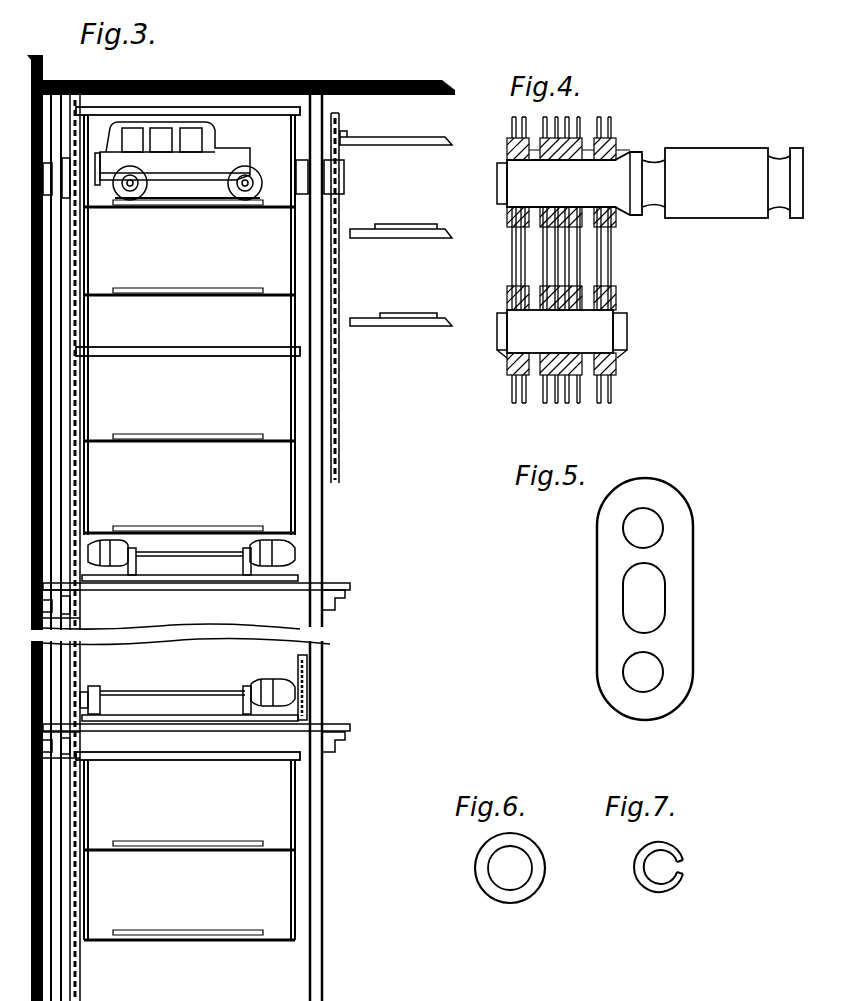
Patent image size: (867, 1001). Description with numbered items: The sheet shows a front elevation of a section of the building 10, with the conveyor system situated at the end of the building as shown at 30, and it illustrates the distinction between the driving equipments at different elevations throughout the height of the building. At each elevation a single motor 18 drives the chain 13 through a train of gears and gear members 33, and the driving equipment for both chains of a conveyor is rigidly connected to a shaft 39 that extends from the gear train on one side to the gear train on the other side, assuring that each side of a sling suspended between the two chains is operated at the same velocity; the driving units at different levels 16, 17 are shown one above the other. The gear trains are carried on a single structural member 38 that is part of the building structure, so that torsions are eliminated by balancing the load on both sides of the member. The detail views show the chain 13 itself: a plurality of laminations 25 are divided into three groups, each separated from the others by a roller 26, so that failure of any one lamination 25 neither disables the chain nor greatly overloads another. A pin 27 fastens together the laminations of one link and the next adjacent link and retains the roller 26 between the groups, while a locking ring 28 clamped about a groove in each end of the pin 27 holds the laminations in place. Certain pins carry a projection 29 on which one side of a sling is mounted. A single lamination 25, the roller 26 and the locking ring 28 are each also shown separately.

In FIG. 3, the wall / shaft structure 10 is at (44, 76).
In FIG. 3, the chain 13 is at (298, 410).
In FIG. 4, the chain 13 is at (695, 274).
In FIG. 3, the lower cage platform drive 16 is at (230, 575).
In FIG. 3, the lower cage platform drive 17 is at (228, 683).
In FIG. 3, the motor 18 is at (276, 682).
In FIG. 4, the lamination 25 is at (510, 258).
In FIG. 5, the lamination 25 is at (686, 558).
In FIG. 4, the roller 26 is at (587, 145).
In FIG. 6, the roller 26 is at (530, 893).
In FIG. 4, the pin 27 is at (627, 323).
In FIG. 4, the locking ring 28 is at (503, 360).
In FIG. 7, the locking ring 28 is at (677, 888).
In FIG. 4, the projection 29 is at (710, 154).
In FIG. 3, the conveyor system location 30 is at (122, 617).
In FIG. 3, the gear member 33 is at (310, 670).
In FIG. 3, the structural member 38 is at (315, 216).
In FIG. 3, the shaft 39 is at (195, 558).